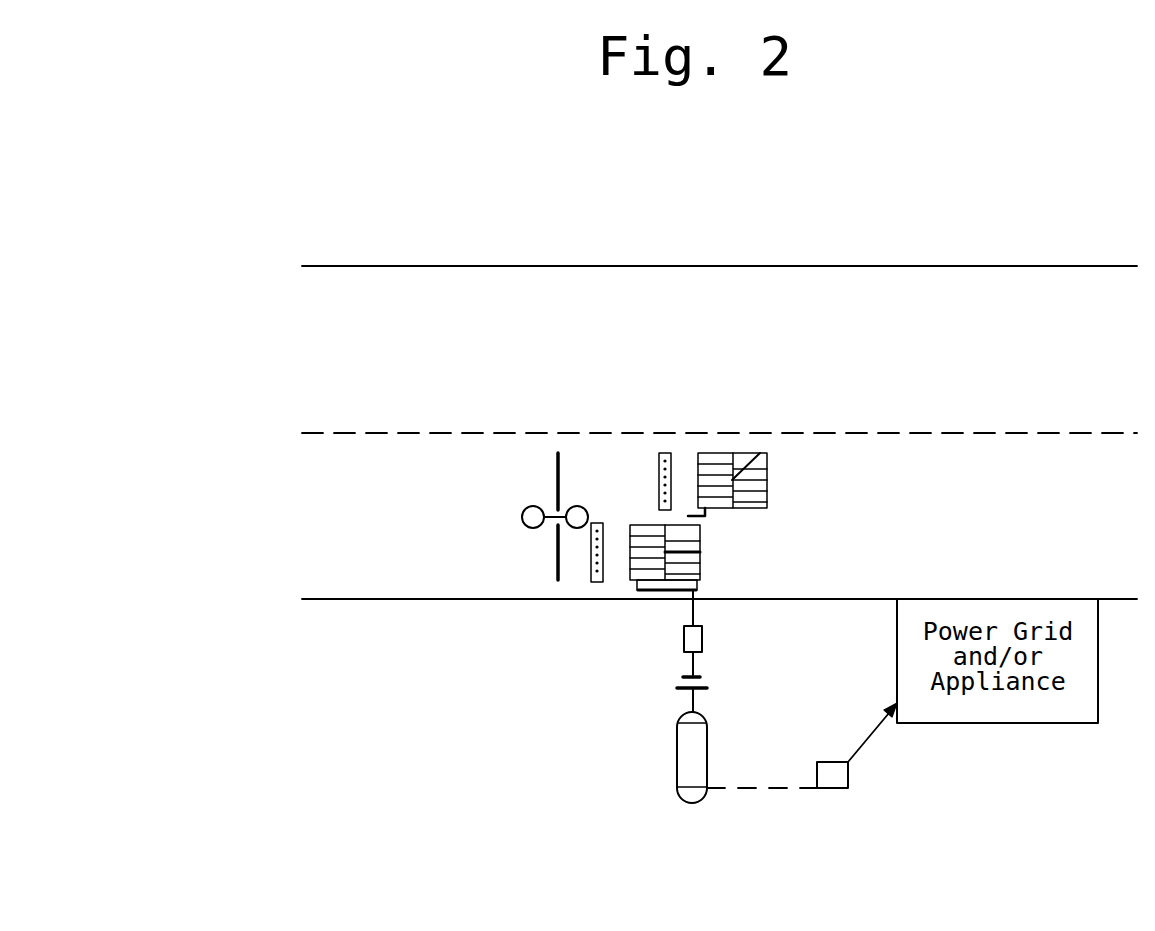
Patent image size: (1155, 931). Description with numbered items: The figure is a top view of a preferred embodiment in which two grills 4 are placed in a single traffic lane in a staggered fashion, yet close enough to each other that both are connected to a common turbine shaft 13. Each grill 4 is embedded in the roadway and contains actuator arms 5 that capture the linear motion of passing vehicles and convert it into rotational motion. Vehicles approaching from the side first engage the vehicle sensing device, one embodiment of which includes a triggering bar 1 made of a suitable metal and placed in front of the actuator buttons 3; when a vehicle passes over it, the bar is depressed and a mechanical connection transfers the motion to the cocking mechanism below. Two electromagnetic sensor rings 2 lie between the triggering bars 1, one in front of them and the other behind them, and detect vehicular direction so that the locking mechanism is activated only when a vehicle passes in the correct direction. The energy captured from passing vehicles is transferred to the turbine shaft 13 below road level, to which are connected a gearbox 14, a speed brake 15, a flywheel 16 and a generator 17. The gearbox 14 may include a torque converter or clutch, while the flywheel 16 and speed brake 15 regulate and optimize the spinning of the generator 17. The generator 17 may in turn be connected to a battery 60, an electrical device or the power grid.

The triggering bar 1 is at (555, 465).
The sensor rings 2 is at (578, 506).
The actuator buttons 3 is at (660, 453).
The grill 4 is at (677, 524).
The actuator arms 5 is at (700, 553).
The turbine shaft 13 is at (683, 613).
The gearbox 14 is at (683, 645).
The speed brake 15 is at (683, 678).
The flywheel 16 is at (677, 690).
The generator 17 is at (677, 773).
The battery 60 is at (848, 780).